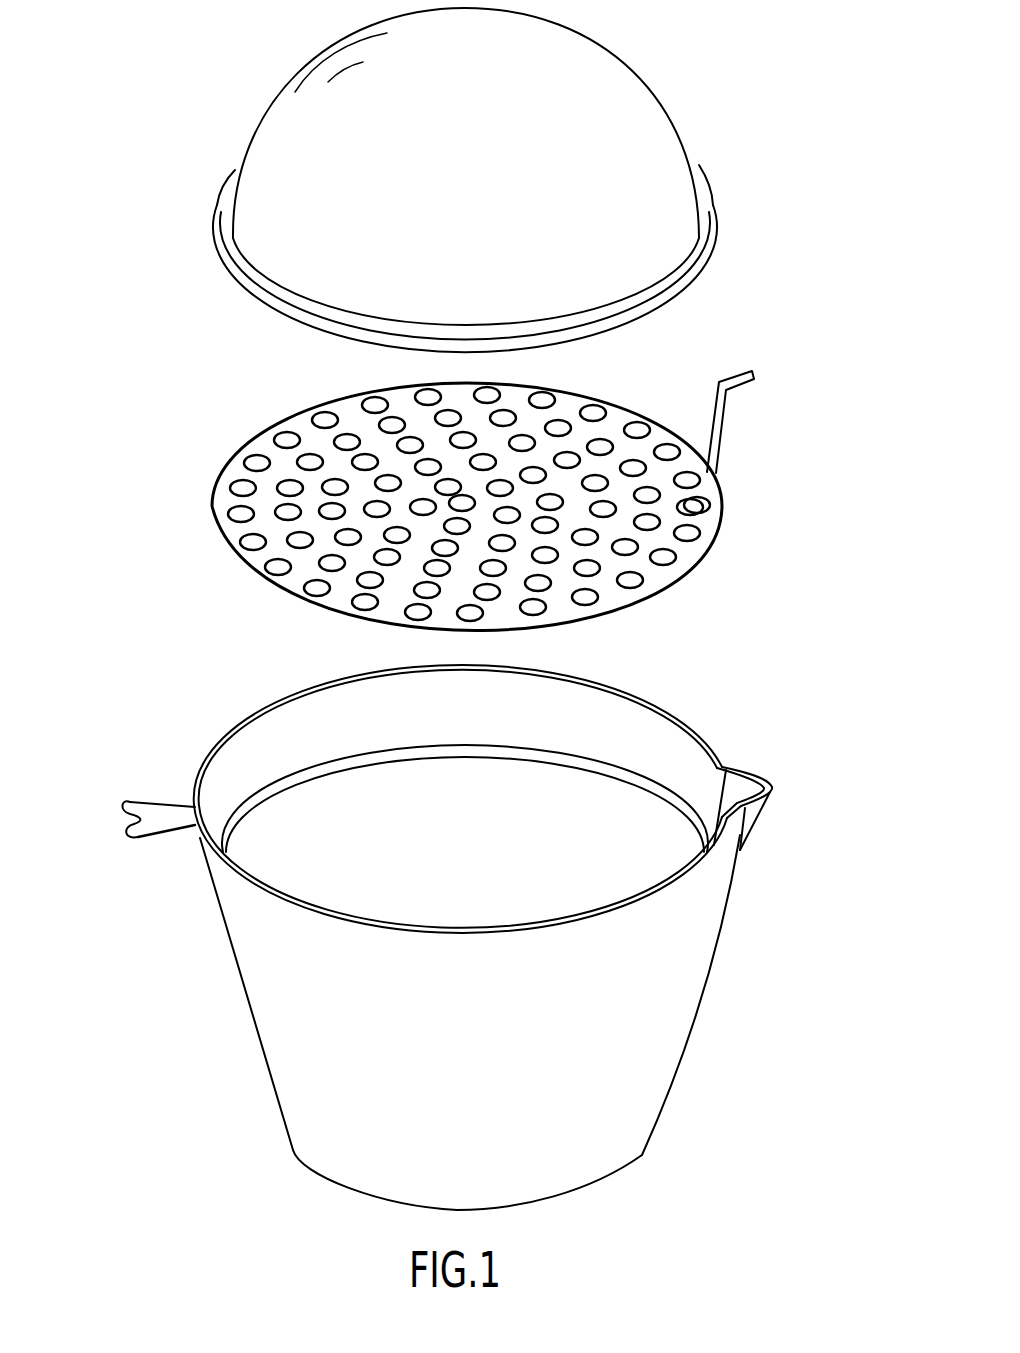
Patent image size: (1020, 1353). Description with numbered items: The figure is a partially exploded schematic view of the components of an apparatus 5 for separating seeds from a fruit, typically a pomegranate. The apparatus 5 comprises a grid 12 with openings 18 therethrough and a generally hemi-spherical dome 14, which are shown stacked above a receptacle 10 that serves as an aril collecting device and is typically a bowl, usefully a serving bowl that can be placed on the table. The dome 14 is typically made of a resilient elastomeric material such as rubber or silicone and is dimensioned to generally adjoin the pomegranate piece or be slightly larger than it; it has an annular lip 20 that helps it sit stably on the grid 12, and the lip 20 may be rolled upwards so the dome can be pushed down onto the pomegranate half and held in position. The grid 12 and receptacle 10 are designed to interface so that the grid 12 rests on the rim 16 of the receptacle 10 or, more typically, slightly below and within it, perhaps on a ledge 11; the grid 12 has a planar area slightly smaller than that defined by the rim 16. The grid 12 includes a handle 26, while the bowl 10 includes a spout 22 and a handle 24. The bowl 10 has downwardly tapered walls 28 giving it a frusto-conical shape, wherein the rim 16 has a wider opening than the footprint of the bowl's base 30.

The apparatus 5 is at (172, 287).
The receptacle 10 is at (258, 1080).
The ledge 11 is at (295, 777).
The grid 12 is at (300, 432).
The dome 14 is at (653, 118).
The rim 16 is at (660, 705).
The openings 18 is at (668, 452).
The annular lip 20 is at (706, 207).
The spout 22 is at (745, 810).
The handle 24 is at (165, 838).
The handle 26 is at (745, 390).
The downwardly tapered walls 28 is at (672, 1055).
The base 30 is at (593, 1186).